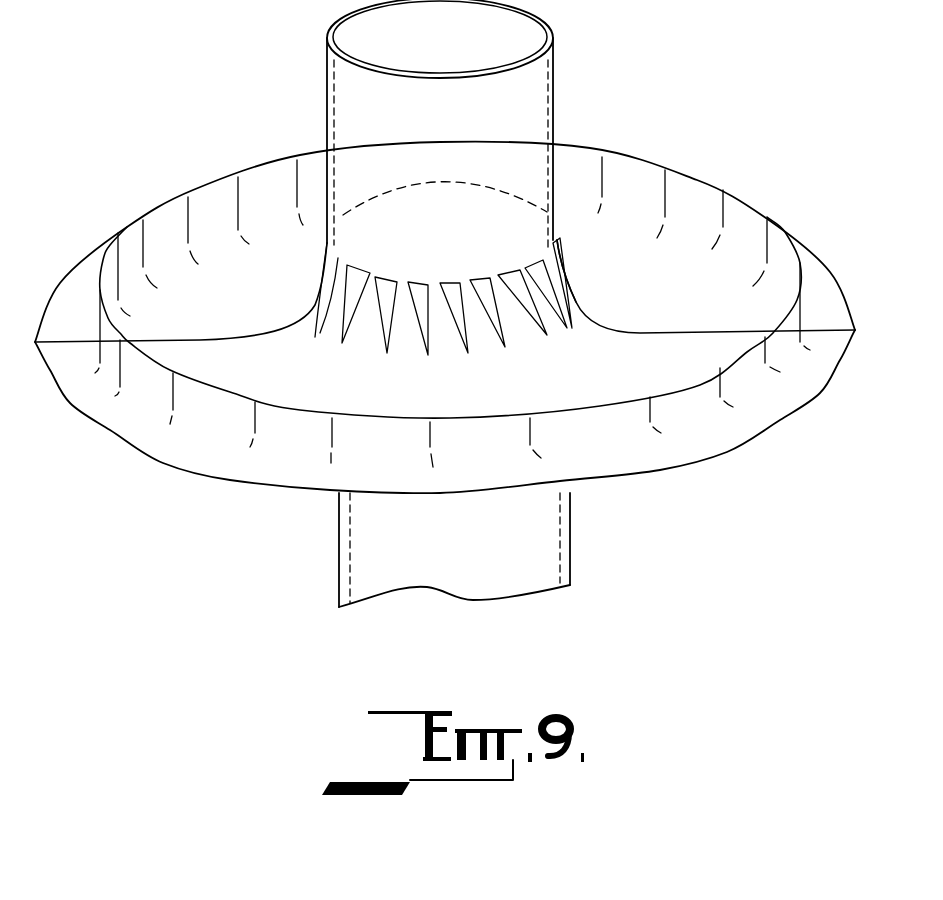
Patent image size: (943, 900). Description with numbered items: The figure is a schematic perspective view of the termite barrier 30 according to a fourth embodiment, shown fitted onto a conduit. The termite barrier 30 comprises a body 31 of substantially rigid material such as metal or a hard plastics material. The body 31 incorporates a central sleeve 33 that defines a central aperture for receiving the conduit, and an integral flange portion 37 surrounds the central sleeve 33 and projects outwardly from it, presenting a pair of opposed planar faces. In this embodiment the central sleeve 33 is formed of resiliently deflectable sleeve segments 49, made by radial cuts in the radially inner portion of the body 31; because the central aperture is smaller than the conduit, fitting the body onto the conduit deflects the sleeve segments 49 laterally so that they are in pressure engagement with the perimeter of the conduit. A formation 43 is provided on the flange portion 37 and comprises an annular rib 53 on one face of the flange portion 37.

The termite barrier 30 is at (173, 197).
The body 31 is at (80, 290).
The central sleeve 33 is at (570, 283).
The flange portion 37 is at (815, 280).
The formation 43 is at (753, 372).
The sleeve segments 49 is at (515, 318).
The annular rib 53 is at (703, 178).